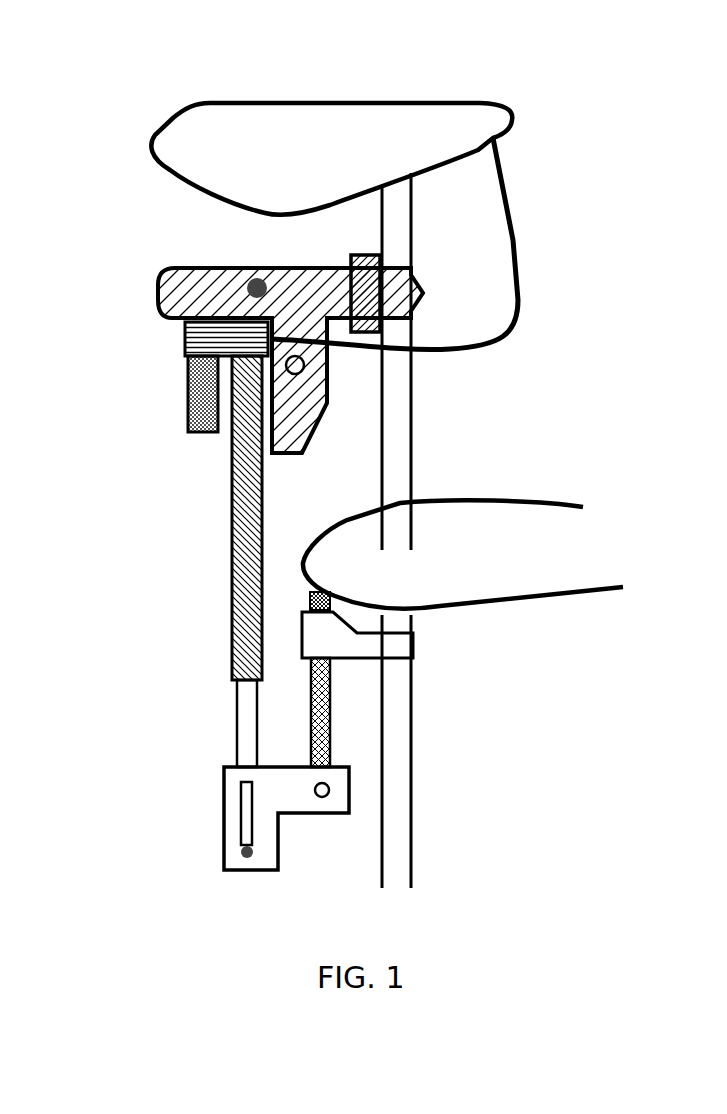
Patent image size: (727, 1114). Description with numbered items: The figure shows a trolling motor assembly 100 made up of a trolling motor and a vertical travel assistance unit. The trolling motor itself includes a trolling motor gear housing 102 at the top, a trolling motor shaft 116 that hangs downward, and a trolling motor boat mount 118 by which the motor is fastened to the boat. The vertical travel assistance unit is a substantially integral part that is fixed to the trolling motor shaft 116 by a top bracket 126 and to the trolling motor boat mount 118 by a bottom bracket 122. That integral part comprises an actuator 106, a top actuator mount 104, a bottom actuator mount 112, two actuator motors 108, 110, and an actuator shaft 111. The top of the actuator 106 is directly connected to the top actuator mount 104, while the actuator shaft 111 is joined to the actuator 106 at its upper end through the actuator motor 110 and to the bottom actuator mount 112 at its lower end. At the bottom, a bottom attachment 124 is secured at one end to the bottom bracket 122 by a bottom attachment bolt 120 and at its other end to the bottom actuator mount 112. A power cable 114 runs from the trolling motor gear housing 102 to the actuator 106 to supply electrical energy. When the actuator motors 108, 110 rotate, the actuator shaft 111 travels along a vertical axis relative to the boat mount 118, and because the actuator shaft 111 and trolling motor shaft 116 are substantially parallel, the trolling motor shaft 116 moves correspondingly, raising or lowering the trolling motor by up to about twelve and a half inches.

The trolling motor assembly 100 is at (580, 41).
The trolling motor gear housing 102 is at (373, 122).
The top actuator mount 104 is at (197, 283).
The actuator 106 is at (185, 336).
The actuator motor 108 is at (185, 387).
The actuator motor 110 is at (232, 515).
The actuator shaft 111 is at (245, 710).
The bottom actuator mount 112 is at (233, 813).
The power cable 114 is at (512, 210).
The trolling motor shaft 116 is at (398, 447).
The trolling motor boat mount 118 is at (535, 532).
The bottom attachment bolt 120 is at (330, 595).
The bottom bracket 122 is at (357, 650).
The bottom attachment 124 is at (310, 720).
The top bracket 126 is at (352, 252).